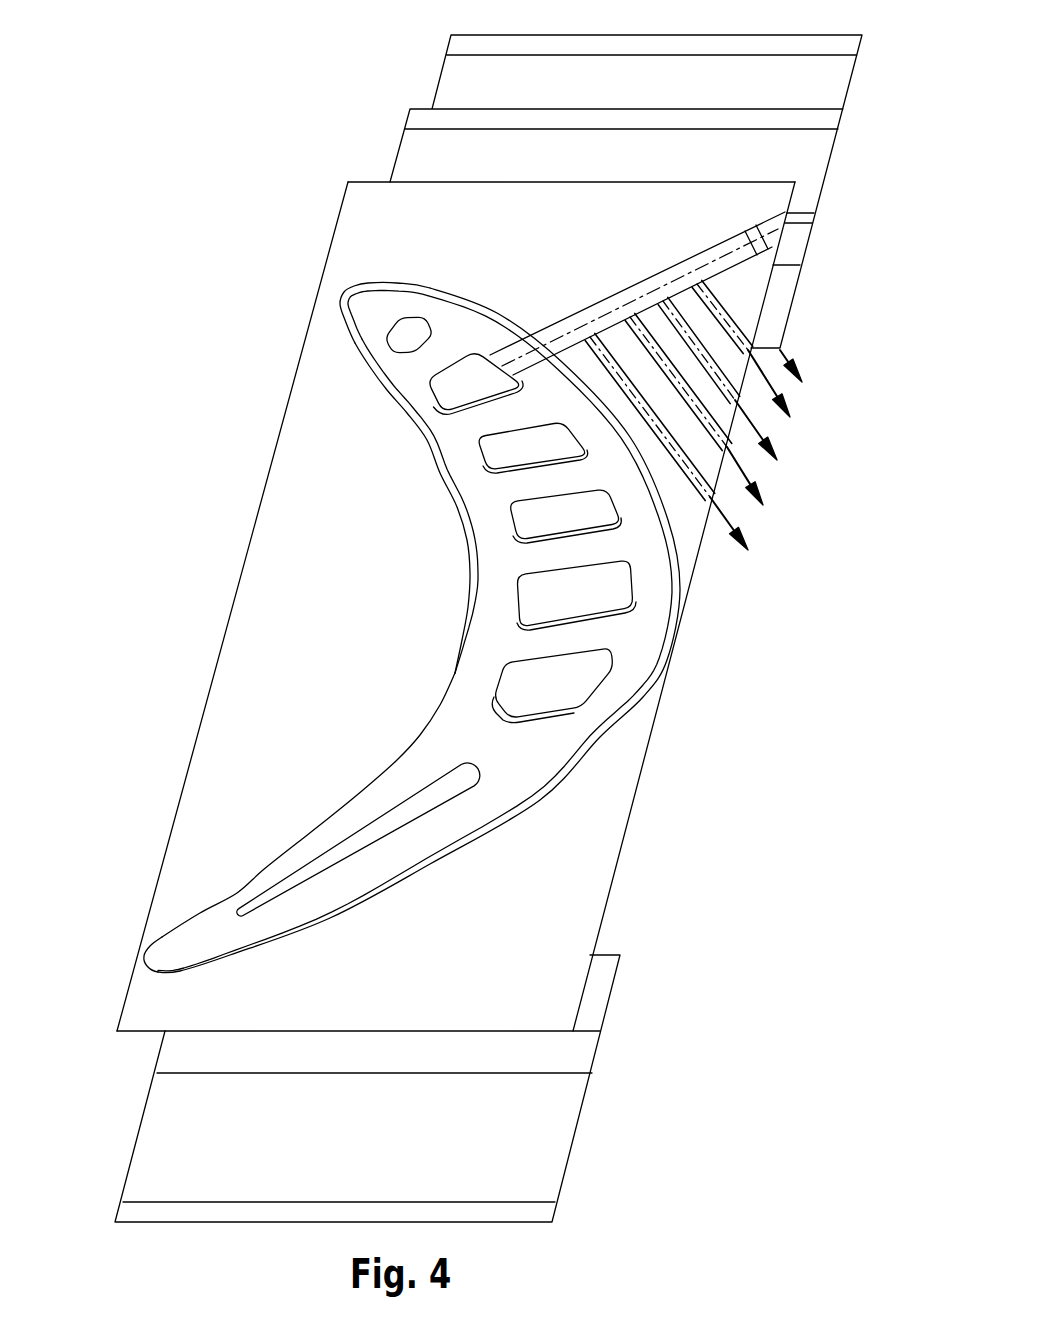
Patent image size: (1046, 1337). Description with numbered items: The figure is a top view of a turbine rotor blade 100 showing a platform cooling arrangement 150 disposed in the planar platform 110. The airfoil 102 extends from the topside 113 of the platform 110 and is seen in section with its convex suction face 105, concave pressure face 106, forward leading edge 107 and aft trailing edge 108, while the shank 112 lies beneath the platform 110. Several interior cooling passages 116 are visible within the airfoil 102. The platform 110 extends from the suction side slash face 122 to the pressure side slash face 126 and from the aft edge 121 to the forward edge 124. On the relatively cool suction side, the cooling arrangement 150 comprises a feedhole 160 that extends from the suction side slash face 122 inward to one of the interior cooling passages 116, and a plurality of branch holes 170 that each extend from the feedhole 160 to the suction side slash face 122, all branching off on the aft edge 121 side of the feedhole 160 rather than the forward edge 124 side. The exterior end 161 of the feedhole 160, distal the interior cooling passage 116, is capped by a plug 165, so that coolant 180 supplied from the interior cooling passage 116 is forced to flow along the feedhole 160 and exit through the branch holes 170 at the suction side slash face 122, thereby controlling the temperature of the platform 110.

The turbine rotor blade 100 is at (169, 196).
The airfoil 102 is at (415, 613).
The convex suction face 105 is at (633, 717).
The concave pressure face 106 is at (468, 608).
The leading edge 107 is at (343, 296).
The trailing edge 108 is at (144, 962).
The platform 110 is at (359, 163).
The shank 112 is at (543, 1143).
The topside 113 is at (322, 569).
The interior cooling passage 116 is at (450, 390).
The aft edge 121 is at (243, 1031).
The suction side slash face 122 is at (702, 543).
The forward edge 124 is at (575, 182).
The pressure side slash face 126 is at (263, 490).
The platform cooling arrangement 150 is at (555, 247).
The feedhole 160 is at (650, 277).
The exterior end 161 is at (800, 220).
The plug 165 is at (770, 212).
The branch holes 170 is at (743, 292).
The coolant 180 is at (583, 323).